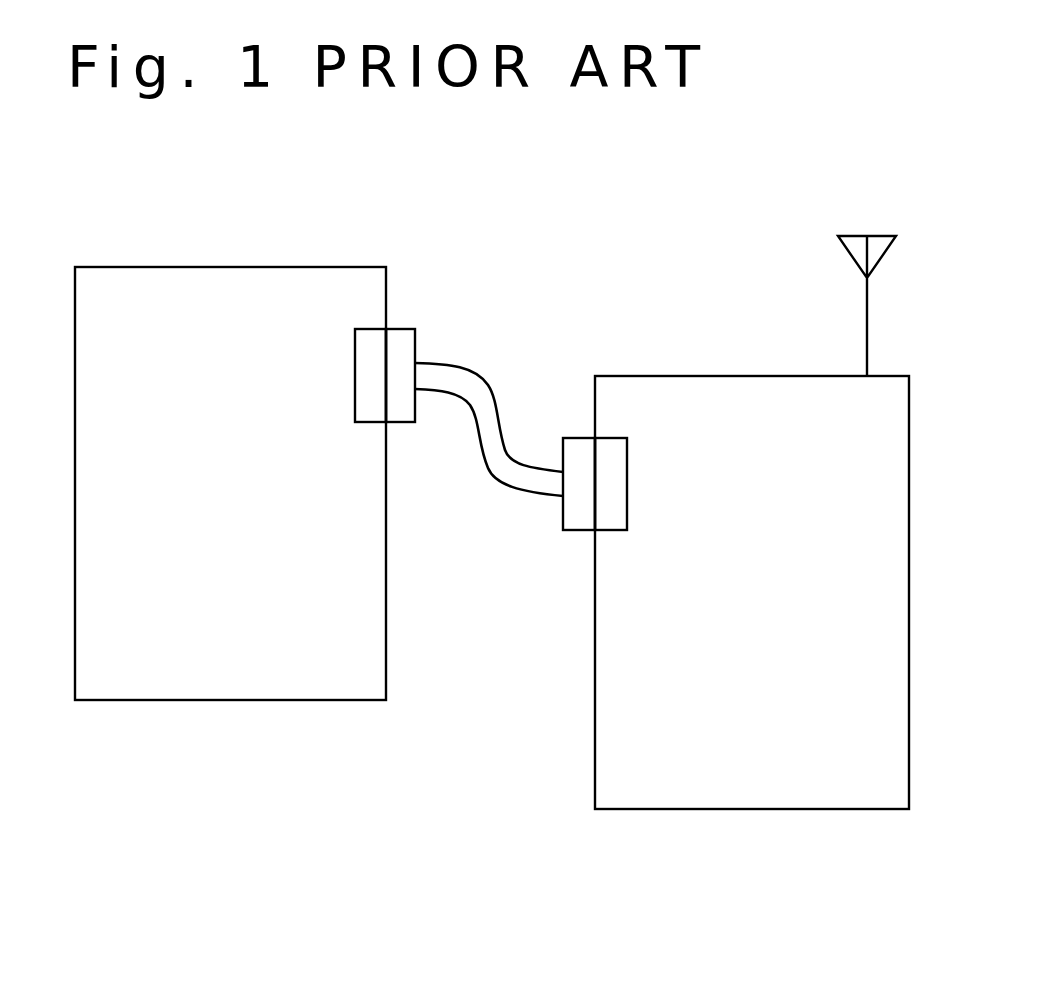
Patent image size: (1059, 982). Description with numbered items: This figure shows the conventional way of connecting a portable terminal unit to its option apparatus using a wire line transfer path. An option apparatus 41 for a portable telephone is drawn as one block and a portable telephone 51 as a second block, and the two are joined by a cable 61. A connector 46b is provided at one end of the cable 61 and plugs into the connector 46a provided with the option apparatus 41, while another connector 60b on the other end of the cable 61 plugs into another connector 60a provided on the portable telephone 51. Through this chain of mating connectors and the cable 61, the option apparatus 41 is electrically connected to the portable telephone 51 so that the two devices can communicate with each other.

The option apparatus for a portable telephone 41 is at (118, 700).
The portable telephone 51 is at (648, 809).
The connector 46a is at (365, 335).
The connector 46b is at (398, 335).
The cable 61 is at (480, 387).
The connector 60a is at (612, 515).
The connector 60b is at (572, 507).